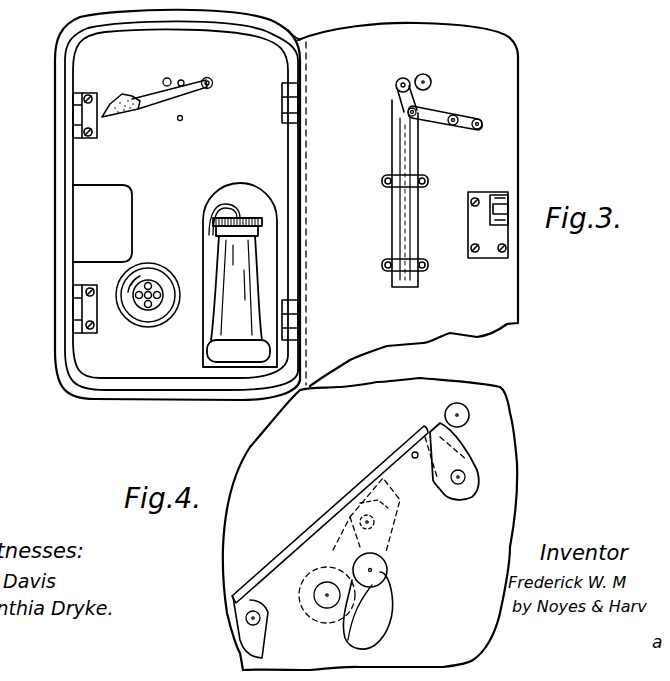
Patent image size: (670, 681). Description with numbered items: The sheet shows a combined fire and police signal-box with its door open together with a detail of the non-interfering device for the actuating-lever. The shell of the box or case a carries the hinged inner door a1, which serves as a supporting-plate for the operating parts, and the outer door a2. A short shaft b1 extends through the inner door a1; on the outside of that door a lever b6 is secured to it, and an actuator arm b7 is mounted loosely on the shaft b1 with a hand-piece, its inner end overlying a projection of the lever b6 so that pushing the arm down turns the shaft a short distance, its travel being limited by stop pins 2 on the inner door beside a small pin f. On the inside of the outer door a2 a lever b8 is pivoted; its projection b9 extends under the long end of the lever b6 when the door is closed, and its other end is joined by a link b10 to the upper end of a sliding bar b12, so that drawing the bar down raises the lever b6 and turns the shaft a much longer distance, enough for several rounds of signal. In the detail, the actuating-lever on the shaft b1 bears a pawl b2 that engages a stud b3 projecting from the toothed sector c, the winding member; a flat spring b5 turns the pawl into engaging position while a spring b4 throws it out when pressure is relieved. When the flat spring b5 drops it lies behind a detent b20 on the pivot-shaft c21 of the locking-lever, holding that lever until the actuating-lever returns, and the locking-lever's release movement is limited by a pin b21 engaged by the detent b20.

In FIG. 3, the shell of the box or case a is at (70, 152).
In FIG. 3, the inner door a1 is at (87, 172).
In FIG. 3, the outer door a2 is at (510, 145).
In FIG. 3, the pin f is at (166, 78).
In FIG. 3, the stop pins 2 is at (184, 80).
In FIG. 3, the lever b6 is at (107, 113).
In FIG. 3, the actuator arm b7 is at (198, 90).
In FIG. 4, the actuator arm b7 is at (333, 550).
In FIG. 3, the lever of the second actuator b8 is at (444, 111).
In FIG. 3, the projection b9 is at (487, 121).
In FIG. 3, the link b10 is at (402, 100).
In FIG. 3, the sliding bar b12 is at (397, 153).
In FIG. 4, the short shaft b1 is at (323, 607).
In FIG. 4, the pawl b2 is at (388, 552).
In FIG. 4, the stud b3 is at (374, 577).
In FIG. 4, the spring b4 is at (383, 513).
In FIG. 4, the flat spring b5 is at (327, 517).
In FIG. 4, the detent b20 is at (456, 452).
In FIG. 4, the pin b21 is at (414, 458).
In FIG. 4, the toothed sector c is at (367, 602).
In FIG. 4, the pivot-shaft of the locking-lever c21 is at (465, 477).